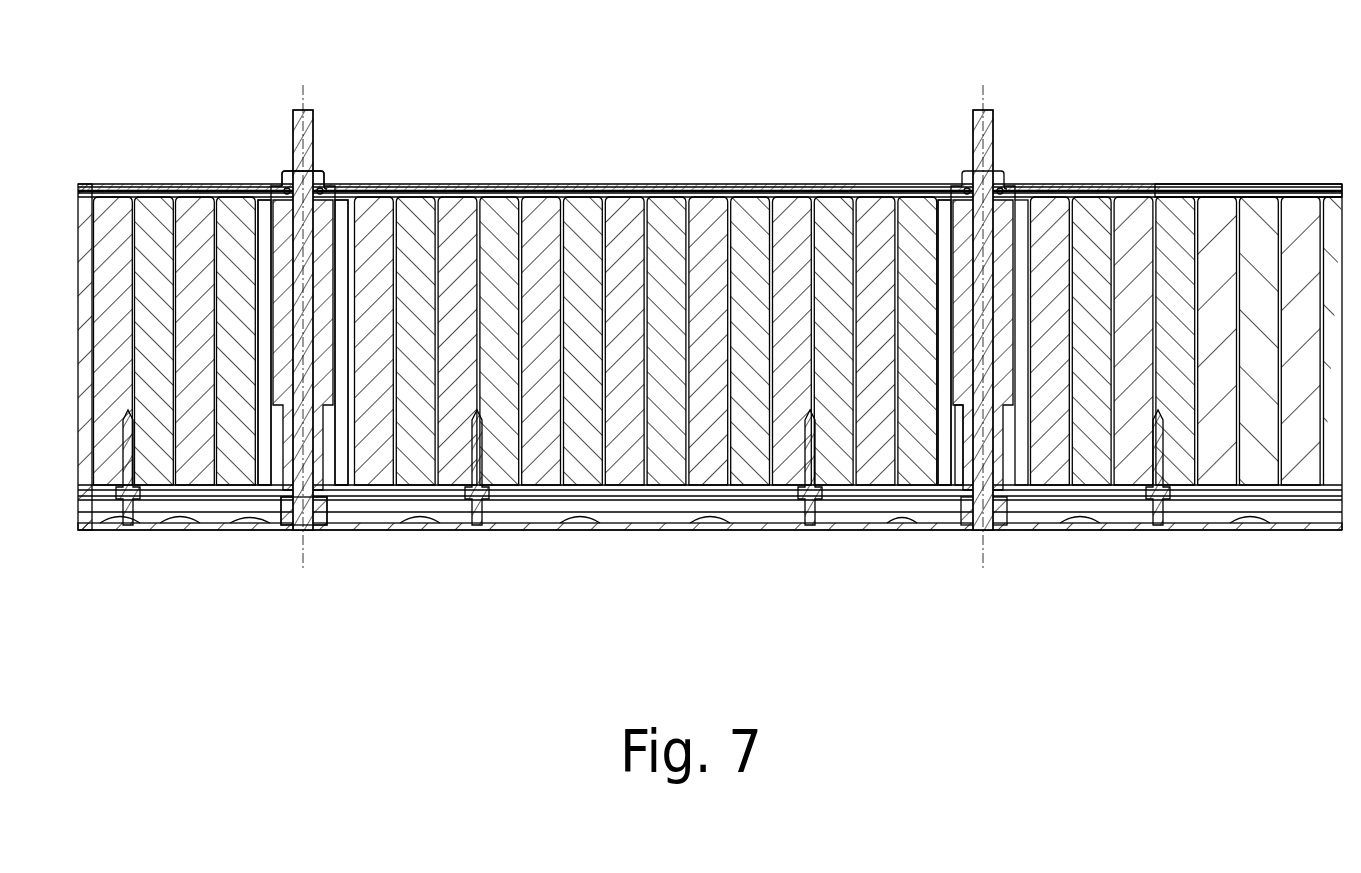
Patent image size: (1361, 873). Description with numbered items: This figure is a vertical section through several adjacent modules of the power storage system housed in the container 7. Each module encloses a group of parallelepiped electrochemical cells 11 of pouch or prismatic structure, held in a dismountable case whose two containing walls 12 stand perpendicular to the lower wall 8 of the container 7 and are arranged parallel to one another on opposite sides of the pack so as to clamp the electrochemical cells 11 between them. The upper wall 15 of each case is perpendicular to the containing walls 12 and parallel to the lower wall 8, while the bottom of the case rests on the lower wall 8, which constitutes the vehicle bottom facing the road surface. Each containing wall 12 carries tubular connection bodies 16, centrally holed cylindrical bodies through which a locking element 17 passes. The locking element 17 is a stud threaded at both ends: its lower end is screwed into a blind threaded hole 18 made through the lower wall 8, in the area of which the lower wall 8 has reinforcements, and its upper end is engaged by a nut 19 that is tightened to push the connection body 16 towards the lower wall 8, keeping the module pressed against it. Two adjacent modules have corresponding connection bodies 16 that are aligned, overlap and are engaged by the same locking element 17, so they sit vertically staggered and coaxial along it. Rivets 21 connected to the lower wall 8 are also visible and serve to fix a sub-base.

The container 7 is at (1090, 638).
The lower wall 8 is at (652, 512).
The electrochemical cells 11 is at (688, 225).
The containing walls 12 is at (273, 435).
The upper wall 15 is at (1210, 190).
The connection bodies 16 is at (290, 375).
The locking element 17 is at (973, 122).
The blind threaded hole 18 is at (300, 509).
The nut 19 is at (316, 170).
The rivets 21 is at (133, 490).